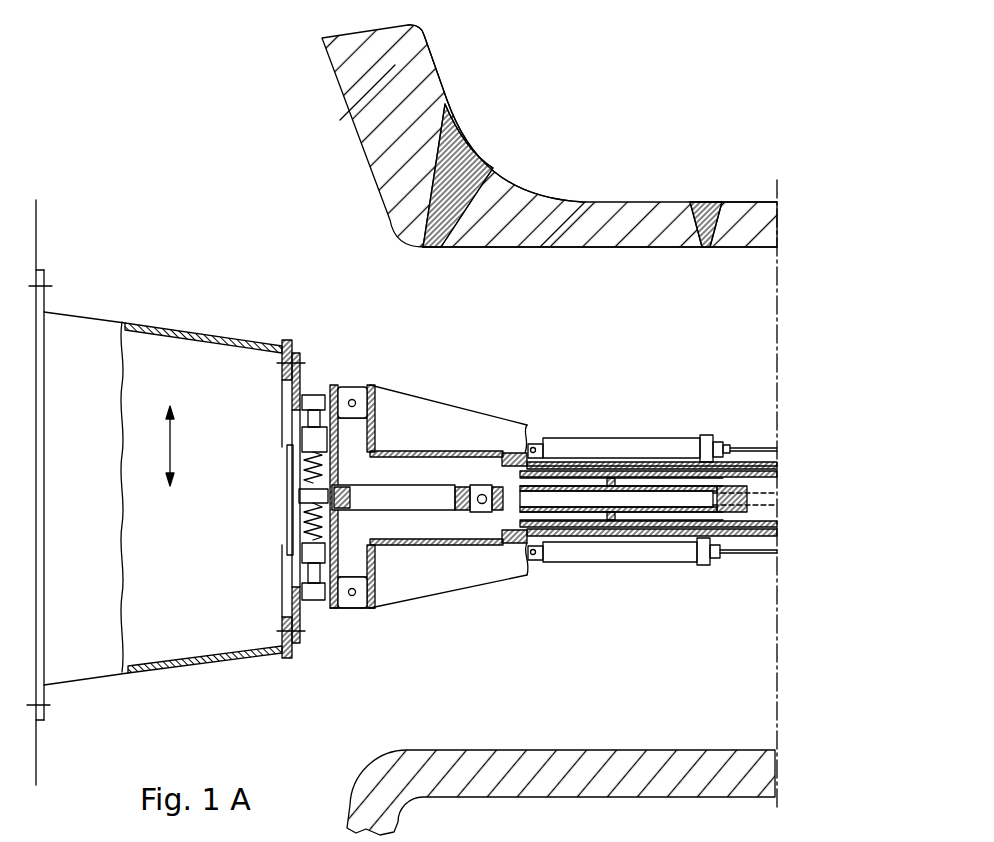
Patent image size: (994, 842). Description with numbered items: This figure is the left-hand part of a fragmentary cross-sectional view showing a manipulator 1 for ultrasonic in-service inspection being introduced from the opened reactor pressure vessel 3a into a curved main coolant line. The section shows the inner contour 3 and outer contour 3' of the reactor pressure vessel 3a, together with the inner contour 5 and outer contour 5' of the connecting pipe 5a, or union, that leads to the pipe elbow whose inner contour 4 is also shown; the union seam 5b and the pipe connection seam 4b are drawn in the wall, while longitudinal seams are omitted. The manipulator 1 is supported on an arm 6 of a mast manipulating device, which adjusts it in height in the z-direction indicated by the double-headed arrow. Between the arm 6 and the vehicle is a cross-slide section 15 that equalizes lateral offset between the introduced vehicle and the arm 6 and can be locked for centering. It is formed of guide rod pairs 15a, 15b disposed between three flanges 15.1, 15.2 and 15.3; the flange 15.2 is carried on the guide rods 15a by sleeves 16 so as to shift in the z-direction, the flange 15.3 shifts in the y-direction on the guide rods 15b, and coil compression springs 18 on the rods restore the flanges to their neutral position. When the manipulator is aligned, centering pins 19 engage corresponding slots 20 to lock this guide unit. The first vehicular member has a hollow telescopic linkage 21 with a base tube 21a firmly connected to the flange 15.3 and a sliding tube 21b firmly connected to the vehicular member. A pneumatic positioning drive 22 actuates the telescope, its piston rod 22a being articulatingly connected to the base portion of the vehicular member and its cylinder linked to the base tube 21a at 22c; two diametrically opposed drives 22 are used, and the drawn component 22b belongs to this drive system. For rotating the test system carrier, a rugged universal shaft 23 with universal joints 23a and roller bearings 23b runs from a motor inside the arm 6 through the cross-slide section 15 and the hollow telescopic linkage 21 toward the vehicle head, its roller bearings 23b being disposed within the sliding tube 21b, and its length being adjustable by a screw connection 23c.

The manipulator 1 is at (617, 355).
The inner contour of reactor pressure vessel 3 is at (546, 136).
The reactor pressure vessel 3a is at (362, 82).
The outer contour of reactor pressure vessel 3' is at (440, 62).
The inner contour of pipe elbow 4 is at (744, 248).
The pipe connection seam 4b is at (705, 217).
The inner contour of connecting pipe 5 is at (600, 270).
The connecting pipe 5a is at (558, 233).
The union seam 5b is at (465, 162).
The outer contour of connecting pipe 5' is at (515, 151).
The arm 6 is at (167, 323).
The cross-slide section 15 is at (355, 615).
The guide rods 15a is at (303, 473).
The guide rods 15b is at (353, 392).
The flange 15.1 is at (287, 538).
The flange 15.2 is at (333, 610).
The flange 15.3 is at (373, 590).
The sleeves 16 is at (307, 438).
The coil compression springs 18 is at (287, 535).
The centering pins 19 is at (320, 490).
The slots 20 is at (303, 500).
The telescopic linkage 21 is at (683, 419).
The base tube 21a is at (470, 451).
The sliding tube 21b is at (752, 462).
The positioning drive 22 is at (573, 438).
The piston rod 22a is at (735, 446).
The inner tube 22b is at (627, 438).
The cylinder linkage point 22c is at (537, 445).
The universal shaft 23 is at (757, 508).
The universal joints 23a is at (484, 504).
The roller bearings 23b is at (608, 530).
The screw connection 23c is at (720, 484).